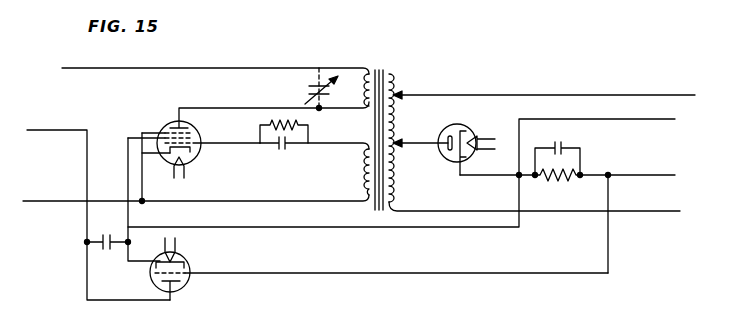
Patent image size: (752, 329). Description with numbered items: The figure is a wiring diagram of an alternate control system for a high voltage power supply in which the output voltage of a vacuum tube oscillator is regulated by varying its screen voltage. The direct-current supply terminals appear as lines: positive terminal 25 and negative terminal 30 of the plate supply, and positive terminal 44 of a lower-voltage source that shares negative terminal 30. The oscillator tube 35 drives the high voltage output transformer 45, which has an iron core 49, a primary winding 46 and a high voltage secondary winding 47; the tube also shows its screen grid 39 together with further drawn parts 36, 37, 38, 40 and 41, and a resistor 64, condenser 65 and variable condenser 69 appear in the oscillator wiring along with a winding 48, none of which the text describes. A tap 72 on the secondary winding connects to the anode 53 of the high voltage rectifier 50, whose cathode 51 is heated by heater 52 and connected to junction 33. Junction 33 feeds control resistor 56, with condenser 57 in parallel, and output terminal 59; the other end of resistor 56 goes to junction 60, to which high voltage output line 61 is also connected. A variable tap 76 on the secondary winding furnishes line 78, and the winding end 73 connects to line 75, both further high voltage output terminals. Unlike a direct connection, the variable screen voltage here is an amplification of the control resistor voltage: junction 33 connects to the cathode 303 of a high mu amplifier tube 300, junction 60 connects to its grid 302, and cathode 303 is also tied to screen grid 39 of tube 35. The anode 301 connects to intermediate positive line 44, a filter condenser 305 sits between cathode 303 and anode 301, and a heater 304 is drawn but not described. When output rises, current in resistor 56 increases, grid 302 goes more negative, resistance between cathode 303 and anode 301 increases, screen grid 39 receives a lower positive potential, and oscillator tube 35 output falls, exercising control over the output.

The positive terminal 25 is at (62, 68).
The negative terminal 30 is at (56, 198).
The junction 33 is at (517, 177).
The oscillator tube 35 is at (254, 140).
The cathode 36 is at (192, 151).
The heater 37 is at (186, 165).
The control grid 38 is at (196, 144).
The screen grid 39 is at (194, 138).
The suppressor grid 40 is at (193, 133).
The anode 41 is at (176, 127).
The positive terminal 44 is at (42, 130).
The high voltage output transformer 45 is at (379, 68).
The primary winding 46 is at (366, 74).
The high voltage secondary winding 47 is at (396, 78).
The feedback winding 48 is at (360, 180).
The iron core 49 is at (377, 207).
The high voltage rectifier 50 is at (469, 142).
The cathode 51 is at (464, 130).
The heater 52 is at (470, 136).
The anode 53 is at (451, 161).
The control resistor 56 is at (555, 180).
The condenser 57 is at (559, 132).
The output terminal 59 is at (640, 119).
The junction 60 is at (609, 172).
The high voltage output line 61 is at (667, 178).
The resistor 64 is at (300, 128).
The capacitor 65 is at (286, 149).
The variable capacitor 69 is at (312, 88).
The tap 72 is at (403, 145).
The end of high voltage secondary winding 73 is at (400, 208).
The line 75 is at (666, 211).
The variable tap 76 is at (403, 97).
The line 78 is at (631, 95).
The high mu amplifier tube 300 is at (364, 270).
The anode 301 is at (178, 283).
The grid 302 is at (186, 274).
The cathode 303 is at (185, 264).
The heater 304 is at (176, 252).
The filter condenser 305 is at (105, 236).